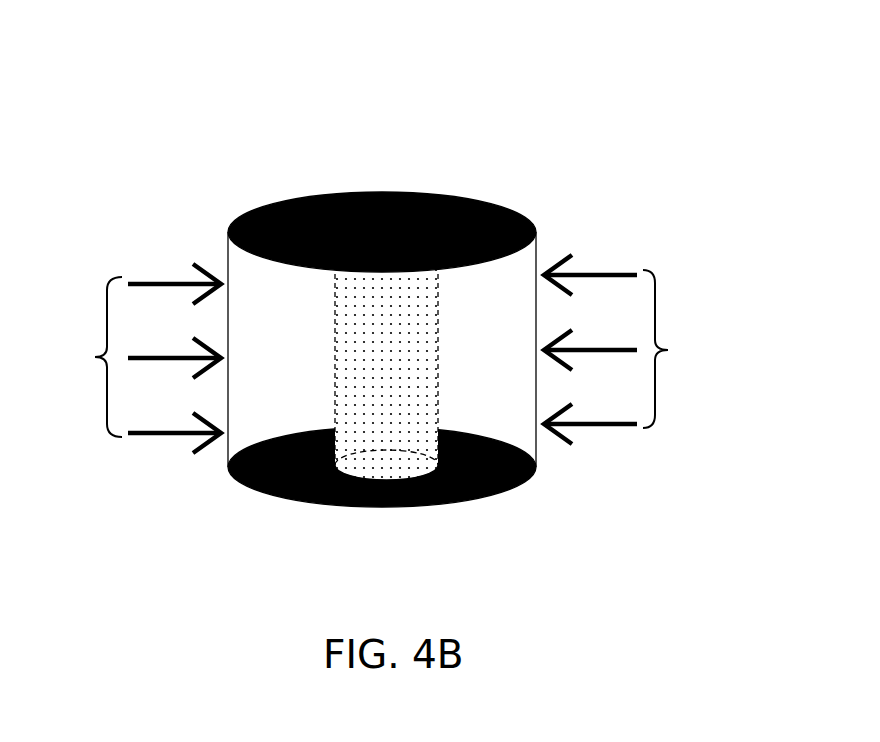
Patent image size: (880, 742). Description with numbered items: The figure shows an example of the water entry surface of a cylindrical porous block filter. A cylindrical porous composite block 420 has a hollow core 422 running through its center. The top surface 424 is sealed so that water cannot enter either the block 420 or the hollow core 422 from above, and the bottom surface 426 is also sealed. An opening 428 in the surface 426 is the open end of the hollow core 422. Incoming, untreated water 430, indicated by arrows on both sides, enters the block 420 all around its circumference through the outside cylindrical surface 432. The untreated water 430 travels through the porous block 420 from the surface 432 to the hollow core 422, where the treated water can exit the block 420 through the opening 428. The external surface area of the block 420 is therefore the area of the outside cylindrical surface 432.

The cylindrical porous composite block 420 is at (210, 180).
The hollow core 422 is at (419, 385).
The surface 424 is at (403, 227).
The surface 426 is at (480, 462).
The opening 428 is at (378, 462).
The untreated water 430 is at (381, 354).
The outside cylindrical surface 432 is at (277, 297).